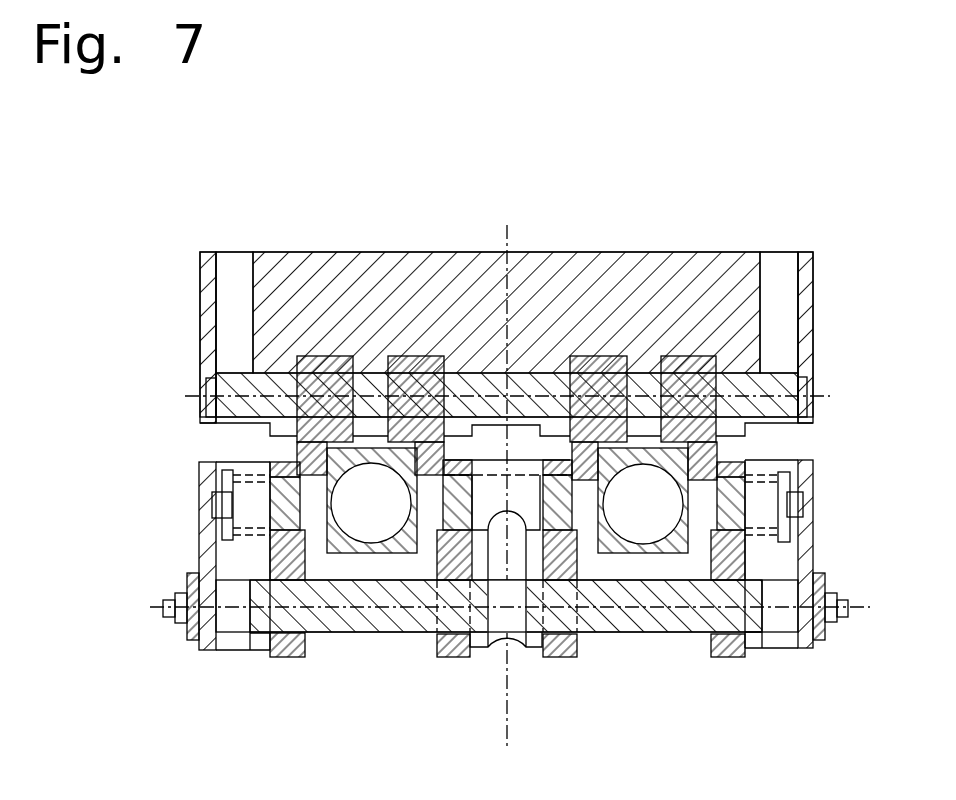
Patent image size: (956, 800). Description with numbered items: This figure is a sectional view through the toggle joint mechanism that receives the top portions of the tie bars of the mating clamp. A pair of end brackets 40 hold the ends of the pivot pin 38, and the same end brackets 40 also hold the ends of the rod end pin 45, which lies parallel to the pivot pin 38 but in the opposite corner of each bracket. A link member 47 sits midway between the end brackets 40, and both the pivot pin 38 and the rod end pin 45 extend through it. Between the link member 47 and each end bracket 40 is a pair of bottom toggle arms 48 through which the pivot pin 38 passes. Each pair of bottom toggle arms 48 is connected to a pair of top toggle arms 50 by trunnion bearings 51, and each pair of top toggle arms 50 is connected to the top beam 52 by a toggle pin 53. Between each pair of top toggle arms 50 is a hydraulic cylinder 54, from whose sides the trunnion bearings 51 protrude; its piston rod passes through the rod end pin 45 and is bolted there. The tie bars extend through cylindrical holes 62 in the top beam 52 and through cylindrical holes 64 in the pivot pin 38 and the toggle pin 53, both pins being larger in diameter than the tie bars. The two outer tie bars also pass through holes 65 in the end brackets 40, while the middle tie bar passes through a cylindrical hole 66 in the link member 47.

The pivot pin 38 is at (402, 638).
The end bracket 40 is at (818, 547).
The rod end pin 45 is at (527, 500).
The link member 47 is at (488, 462).
The bottom toggle arm 48 is at (547, 660).
The top toggle arm 50 is at (285, 448).
The trunnion bearing 51 is at (710, 515).
The top beam 52 is at (377, 250).
The toggle pin 53 is at (650, 372).
The hydraulic cylinder 54 is at (640, 510).
The cylindrical hole 62 is at (785, 270).
The cylindrical hole 64 is at (222, 386).
The hole 65 is at (228, 555).
The cylindrical hole 66 is at (492, 552).